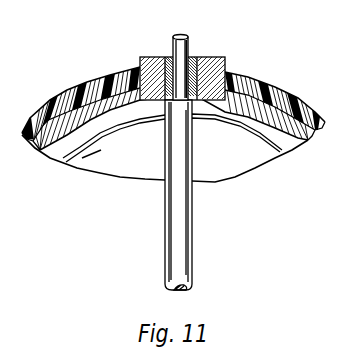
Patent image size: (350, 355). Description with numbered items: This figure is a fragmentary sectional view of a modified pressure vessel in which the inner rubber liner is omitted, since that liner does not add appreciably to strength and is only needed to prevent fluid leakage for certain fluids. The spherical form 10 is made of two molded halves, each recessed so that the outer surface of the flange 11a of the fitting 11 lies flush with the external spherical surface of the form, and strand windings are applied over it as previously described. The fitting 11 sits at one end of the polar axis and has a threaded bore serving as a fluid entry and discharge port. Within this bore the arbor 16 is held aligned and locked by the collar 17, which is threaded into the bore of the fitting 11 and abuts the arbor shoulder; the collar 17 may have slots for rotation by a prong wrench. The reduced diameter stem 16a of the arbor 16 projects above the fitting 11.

The spherical form 10 is at (58, 148).
The fitting 11 is at (140, 76).
The flange 11a is at (248, 112).
The arbor 16 is at (185, 238).
The reduced diameter stem 16a is at (189, 38).
The collar 17 is at (168, 56).